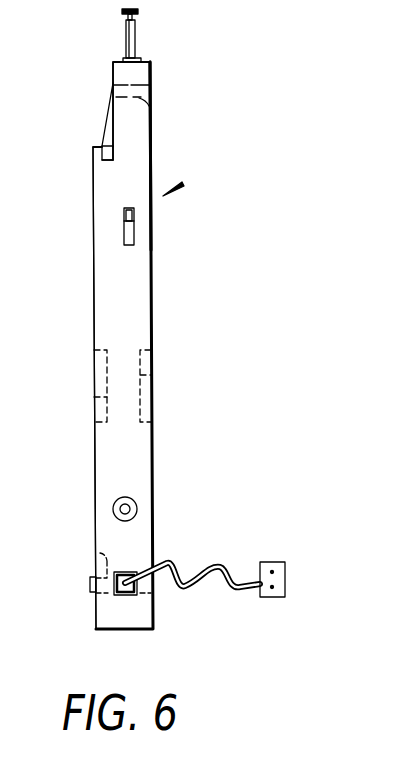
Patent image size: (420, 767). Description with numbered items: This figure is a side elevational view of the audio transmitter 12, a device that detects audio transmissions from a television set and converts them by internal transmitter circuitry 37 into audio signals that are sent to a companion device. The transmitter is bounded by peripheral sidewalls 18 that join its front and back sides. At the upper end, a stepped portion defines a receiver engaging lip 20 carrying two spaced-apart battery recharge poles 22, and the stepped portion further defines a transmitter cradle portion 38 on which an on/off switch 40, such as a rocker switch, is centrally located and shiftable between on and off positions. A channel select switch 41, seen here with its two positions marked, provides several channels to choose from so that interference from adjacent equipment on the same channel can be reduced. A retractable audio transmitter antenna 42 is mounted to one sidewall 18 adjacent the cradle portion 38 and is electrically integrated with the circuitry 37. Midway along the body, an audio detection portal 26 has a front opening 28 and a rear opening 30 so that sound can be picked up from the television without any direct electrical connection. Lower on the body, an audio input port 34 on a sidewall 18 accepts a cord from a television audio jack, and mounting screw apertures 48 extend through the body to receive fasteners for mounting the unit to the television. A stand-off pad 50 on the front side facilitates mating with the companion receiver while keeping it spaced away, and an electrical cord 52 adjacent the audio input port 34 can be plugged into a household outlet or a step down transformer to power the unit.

The audio transmitter 12 is at (184, 186).
The peripheral sidewalls 18 is at (137, 483).
The receiver engaging lip 20 is at (108, 161).
The battery recharge poles 22 is at (102, 150).
The audio detection portal 26 is at (94, 362).
The front opening 28 is at (94, 397).
The rear opening 30 is at (151, 376).
The audio input port 34 is at (114, 504).
The internal transmitter circuitry 37 is at (152, 156).
The transmitter cradle portion 38 is at (113, 72).
The on/off switch 40 is at (107, 115).
The channel select switch 41 is at (134, 213).
The retractable audio transmitter antenna 42 is at (137, 42).
The mounting screw apertures 48 is at (150, 106).
The stand-off pads 50 is at (90, 587).
The electrical cord 52 is at (185, 590).